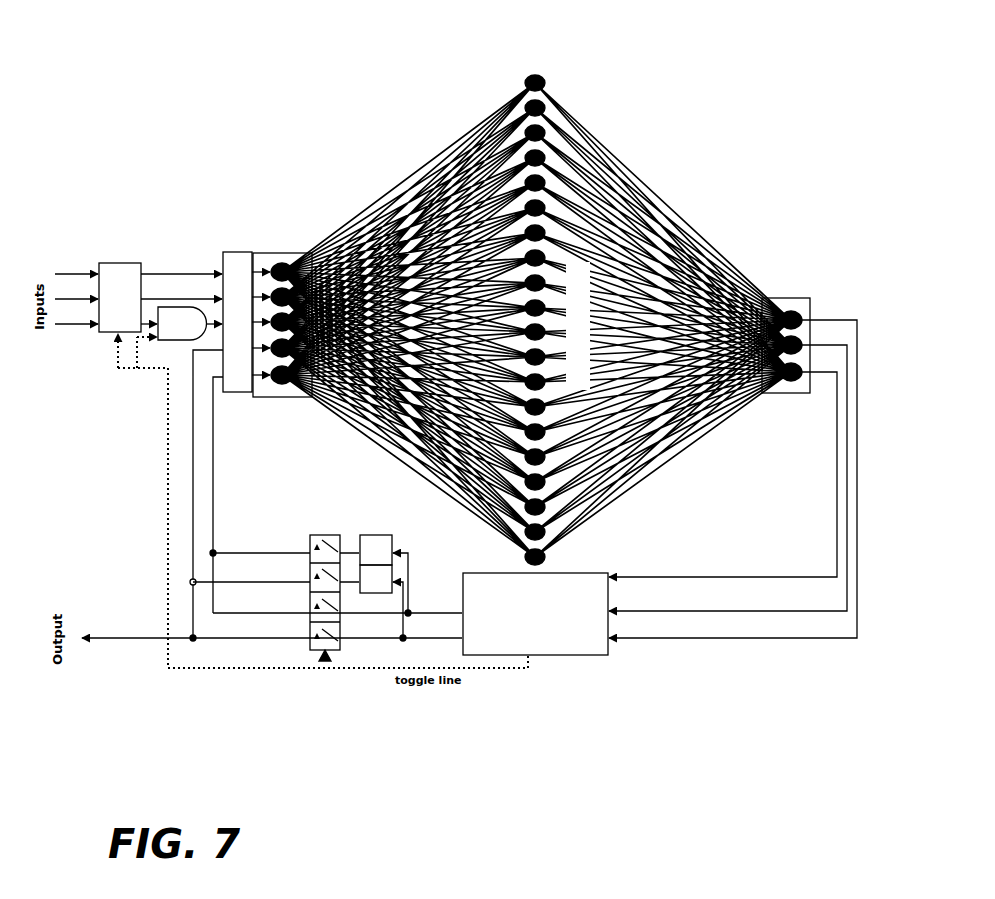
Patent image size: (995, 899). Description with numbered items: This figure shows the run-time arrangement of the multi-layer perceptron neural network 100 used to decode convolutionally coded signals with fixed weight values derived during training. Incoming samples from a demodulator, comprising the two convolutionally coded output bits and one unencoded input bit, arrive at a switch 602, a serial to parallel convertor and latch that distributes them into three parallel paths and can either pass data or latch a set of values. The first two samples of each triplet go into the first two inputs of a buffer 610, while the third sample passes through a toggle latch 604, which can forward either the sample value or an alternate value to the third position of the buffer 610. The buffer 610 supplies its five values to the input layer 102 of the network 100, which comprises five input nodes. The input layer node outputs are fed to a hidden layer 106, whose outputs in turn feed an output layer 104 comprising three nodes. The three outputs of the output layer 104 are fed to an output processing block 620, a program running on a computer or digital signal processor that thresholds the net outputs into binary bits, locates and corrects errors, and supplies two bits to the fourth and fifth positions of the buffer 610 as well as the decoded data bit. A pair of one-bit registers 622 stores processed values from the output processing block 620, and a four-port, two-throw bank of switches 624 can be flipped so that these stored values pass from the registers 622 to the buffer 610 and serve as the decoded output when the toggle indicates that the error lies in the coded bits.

The multi-layer perceptron neural network 100 is at (697, 158).
The input layer 102 is at (292, 252).
The output layer 104 is at (785, 298).
The hidden layer 106 is at (533, 74).
The switch 602 is at (119, 262).
The toggle latch 604 is at (170, 340).
The buffer 610 is at (237, 252).
The output processing block 620 is at (580, 655).
The one-bit registers 622 is at (377, 535).
The bank of switches 624 is at (325, 535).